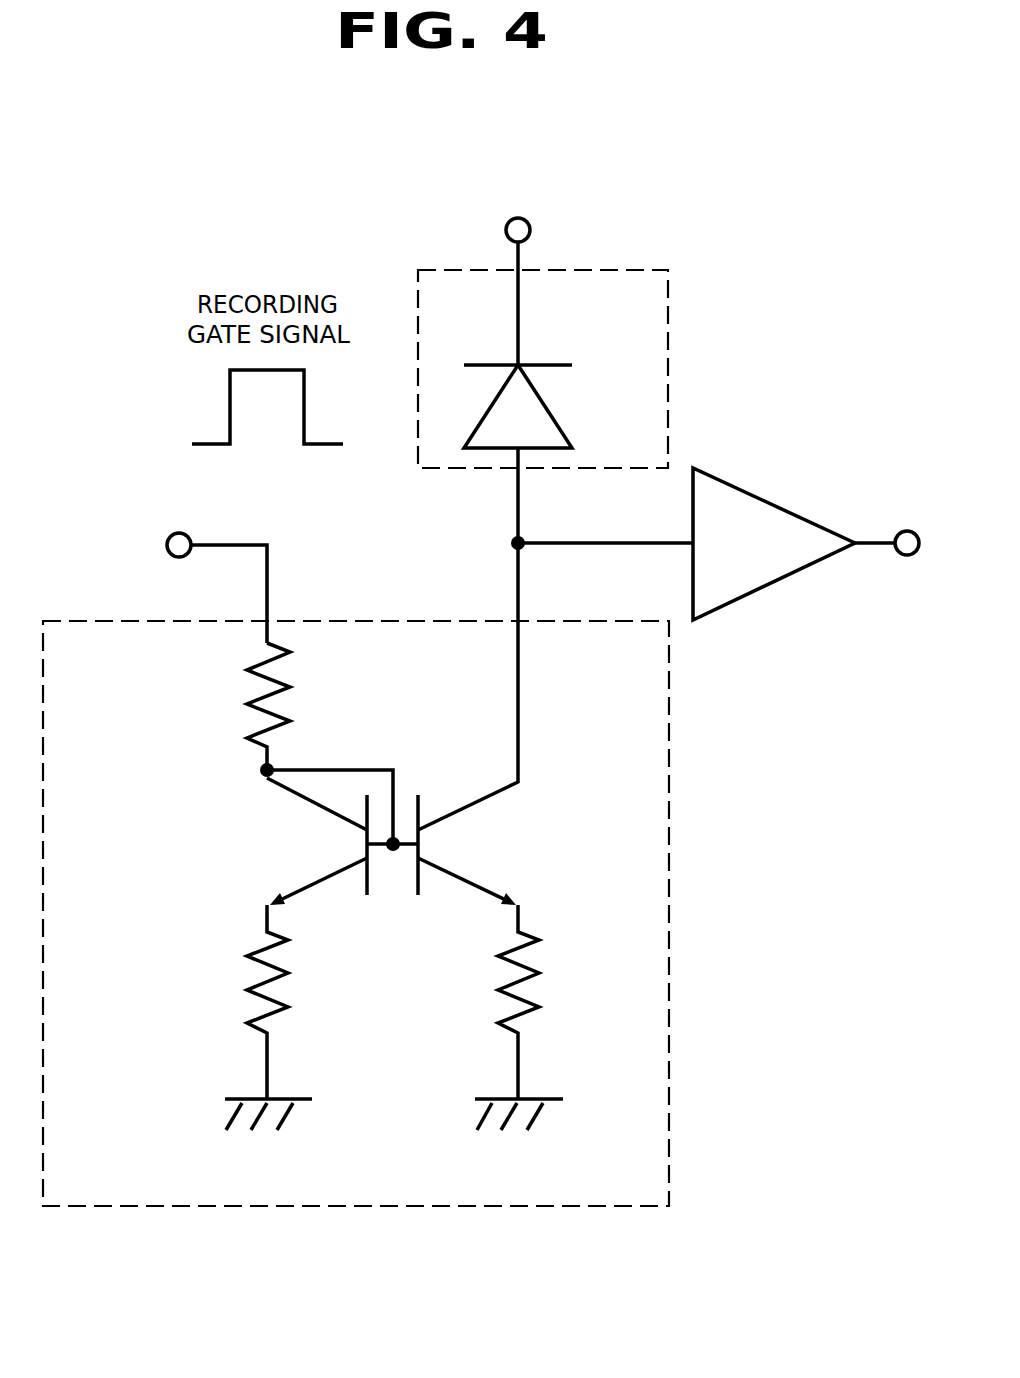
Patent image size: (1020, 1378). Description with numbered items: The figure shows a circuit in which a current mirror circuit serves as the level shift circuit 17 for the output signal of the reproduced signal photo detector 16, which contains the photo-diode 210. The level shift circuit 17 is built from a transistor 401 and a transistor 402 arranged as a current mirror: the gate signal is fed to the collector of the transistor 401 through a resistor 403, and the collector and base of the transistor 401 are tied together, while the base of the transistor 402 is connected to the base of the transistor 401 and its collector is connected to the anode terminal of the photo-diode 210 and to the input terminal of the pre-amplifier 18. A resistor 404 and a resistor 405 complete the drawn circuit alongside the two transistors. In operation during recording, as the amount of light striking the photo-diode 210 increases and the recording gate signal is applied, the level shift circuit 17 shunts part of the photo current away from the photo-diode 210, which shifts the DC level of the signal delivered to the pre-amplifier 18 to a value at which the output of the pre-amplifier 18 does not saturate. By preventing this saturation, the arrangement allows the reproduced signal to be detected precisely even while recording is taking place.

The reproduced signal photo detector 16 is at (623, 268).
The photo-diode 210 is at (546, 395).
The pre-amplifier 18 is at (765, 500).
The level shift circuit 17 is at (148, 1207).
The transistor 401 is at (318, 840).
The transistor 402 is at (468, 843).
The resistor 403 is at (245, 690).
The resistor 404 is at (245, 973).
The resistor 405 is at (546, 978).